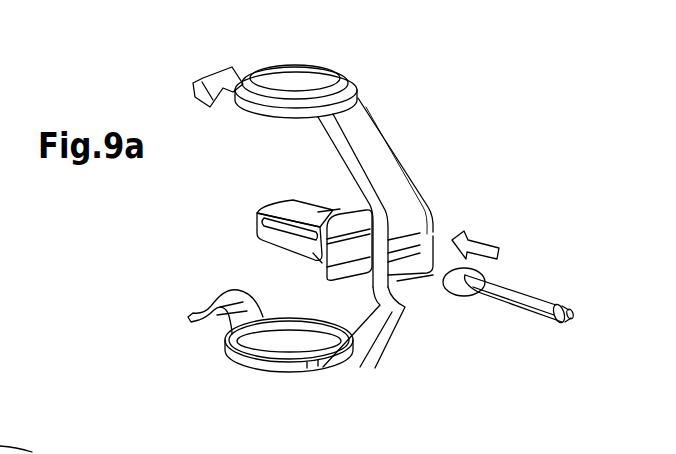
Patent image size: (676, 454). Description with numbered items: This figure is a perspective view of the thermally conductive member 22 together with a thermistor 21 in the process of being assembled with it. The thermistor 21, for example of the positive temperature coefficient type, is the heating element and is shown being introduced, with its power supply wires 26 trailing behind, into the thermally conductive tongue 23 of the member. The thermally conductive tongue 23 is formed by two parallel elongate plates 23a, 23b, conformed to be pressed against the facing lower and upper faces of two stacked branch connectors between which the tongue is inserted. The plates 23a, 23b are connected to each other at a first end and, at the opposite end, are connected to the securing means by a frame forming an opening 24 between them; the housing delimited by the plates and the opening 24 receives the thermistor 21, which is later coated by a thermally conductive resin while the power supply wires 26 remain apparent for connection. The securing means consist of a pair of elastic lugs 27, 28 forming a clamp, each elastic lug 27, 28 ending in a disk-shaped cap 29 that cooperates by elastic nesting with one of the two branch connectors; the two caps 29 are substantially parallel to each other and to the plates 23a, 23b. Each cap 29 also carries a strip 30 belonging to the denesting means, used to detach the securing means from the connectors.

The thermistor 21 is at (472, 293).
The thermally conductive member 22 is at (428, 93).
The thermally conductive tongue 23 is at (316, 205).
The plate 23a is at (285, 210).
The plate 23b is at (273, 236).
The opening 24 is at (425, 265).
The power supply wires 26 is at (546, 300).
The elastic lug 27 is at (423, 188).
The elastic lug 28 is at (390, 335).
The cap 29 is at (308, 77).
The strip 30 is at (215, 83).